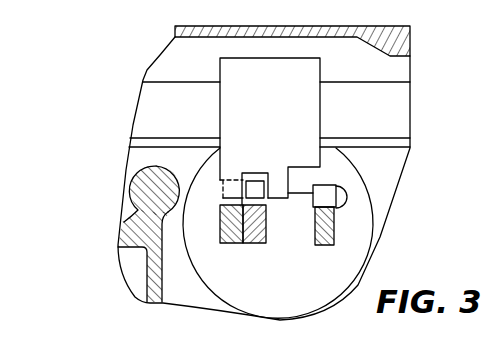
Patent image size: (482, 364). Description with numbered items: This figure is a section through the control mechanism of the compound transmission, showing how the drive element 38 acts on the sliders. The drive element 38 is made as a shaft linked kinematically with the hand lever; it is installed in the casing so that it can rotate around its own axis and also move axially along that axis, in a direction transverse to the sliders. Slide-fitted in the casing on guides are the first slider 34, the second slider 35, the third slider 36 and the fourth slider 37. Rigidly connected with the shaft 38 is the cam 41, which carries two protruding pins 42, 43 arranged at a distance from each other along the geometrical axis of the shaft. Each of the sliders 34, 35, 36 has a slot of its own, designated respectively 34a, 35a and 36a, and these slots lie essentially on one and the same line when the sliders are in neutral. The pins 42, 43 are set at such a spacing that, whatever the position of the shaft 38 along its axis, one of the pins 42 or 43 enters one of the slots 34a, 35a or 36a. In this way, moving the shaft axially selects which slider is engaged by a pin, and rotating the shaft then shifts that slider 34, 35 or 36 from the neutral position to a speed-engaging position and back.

The drive element 38 is at (145, 89).
The cam 41 is at (307, 80).
The protruding pin 42 is at (230, 190).
The protruding pin 43 is at (282, 182).
The first slider 34 is at (231, 245).
The slot 34a is at (203, 220).
The second slider 35 is at (257, 245).
The slot 35a is at (256, 190).
The third slider 36 is at (324, 247).
The slot 36a is at (313, 197).
The fourth slider 37 is at (347, 217).